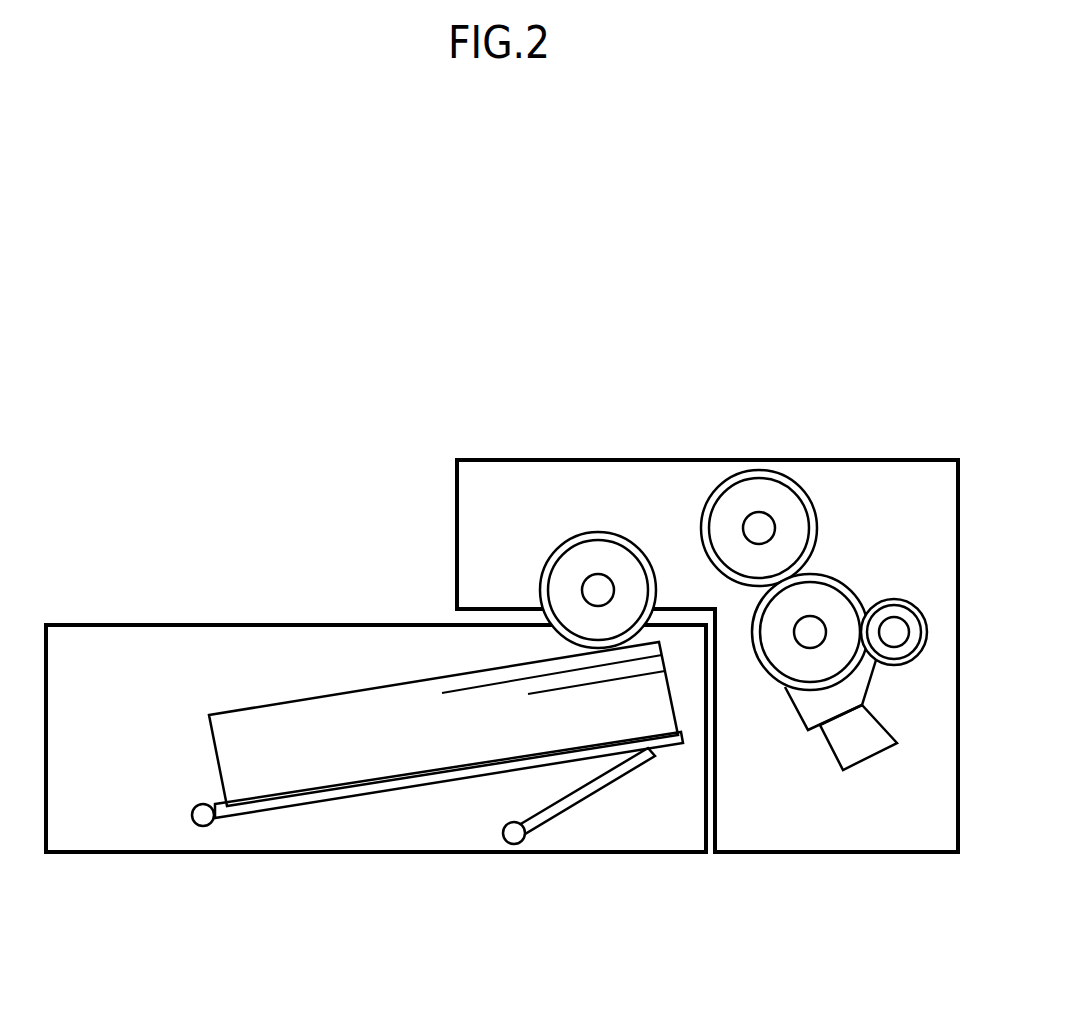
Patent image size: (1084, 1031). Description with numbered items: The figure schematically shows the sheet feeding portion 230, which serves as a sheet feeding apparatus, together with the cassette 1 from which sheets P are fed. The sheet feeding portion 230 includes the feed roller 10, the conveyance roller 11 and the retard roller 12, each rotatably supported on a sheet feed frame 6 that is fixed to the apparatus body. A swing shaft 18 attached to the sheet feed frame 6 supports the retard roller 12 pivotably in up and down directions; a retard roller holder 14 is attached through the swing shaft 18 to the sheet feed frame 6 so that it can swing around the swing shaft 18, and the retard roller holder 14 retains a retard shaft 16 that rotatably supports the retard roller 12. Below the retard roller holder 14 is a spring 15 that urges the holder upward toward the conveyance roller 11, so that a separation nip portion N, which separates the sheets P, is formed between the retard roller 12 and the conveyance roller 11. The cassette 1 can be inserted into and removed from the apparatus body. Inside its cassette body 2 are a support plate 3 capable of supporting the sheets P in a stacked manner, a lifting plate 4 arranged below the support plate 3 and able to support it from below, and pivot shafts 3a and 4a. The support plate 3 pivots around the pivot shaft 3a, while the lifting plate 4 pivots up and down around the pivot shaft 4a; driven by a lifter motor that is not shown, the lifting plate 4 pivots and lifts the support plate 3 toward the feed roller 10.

The sheet feeding portion 230 is at (620, 337).
The cassette 1 is at (282, 598).
The cassette body 2 is at (207, 625).
The support plate 3 is at (303, 808).
The pivot shaft 3a is at (191, 818).
The lifting plate 4 is at (567, 815).
The pivot shaft 4a is at (503, 837).
The sheet feed frame 6 is at (457, 497).
The feed roller 10 is at (540, 575).
The conveyance roller 11 is at (745, 472).
The retard roller 12 is at (850, 585).
The retard roller holder 14 is at (798, 715).
The spring 15 is at (875, 758).
The retard shaft 16 is at (812, 613).
The swing shaft 18 is at (893, 615).
The separation nip portion N is at (785, 578).
The sheets P is at (333, 692).